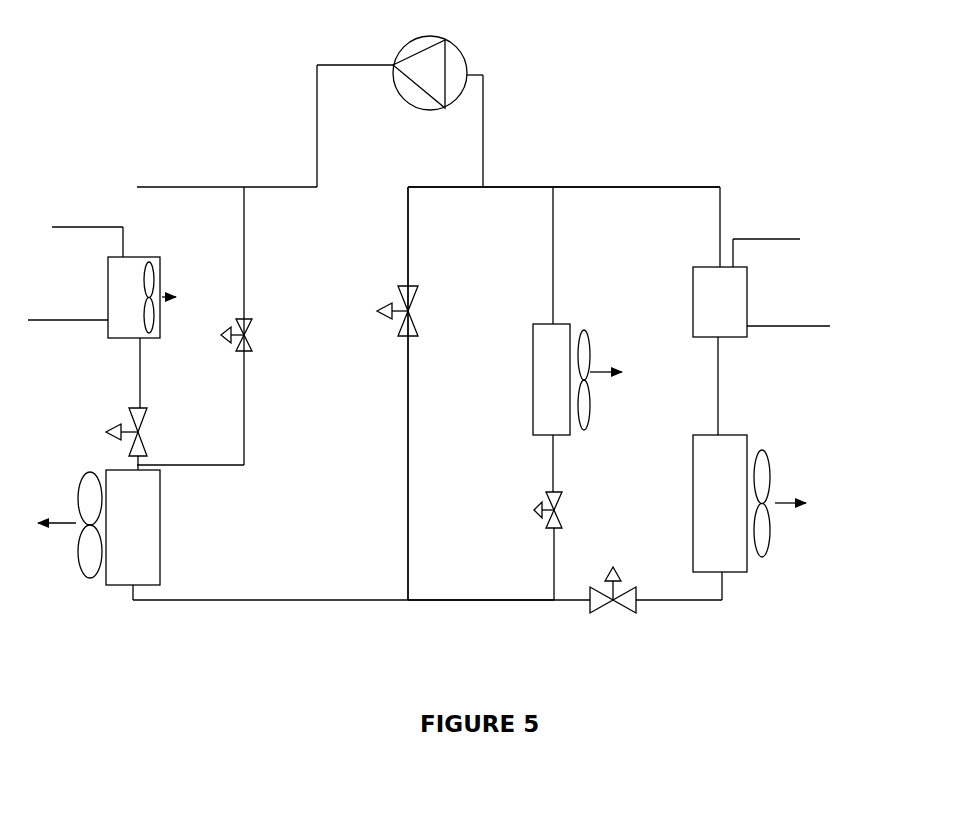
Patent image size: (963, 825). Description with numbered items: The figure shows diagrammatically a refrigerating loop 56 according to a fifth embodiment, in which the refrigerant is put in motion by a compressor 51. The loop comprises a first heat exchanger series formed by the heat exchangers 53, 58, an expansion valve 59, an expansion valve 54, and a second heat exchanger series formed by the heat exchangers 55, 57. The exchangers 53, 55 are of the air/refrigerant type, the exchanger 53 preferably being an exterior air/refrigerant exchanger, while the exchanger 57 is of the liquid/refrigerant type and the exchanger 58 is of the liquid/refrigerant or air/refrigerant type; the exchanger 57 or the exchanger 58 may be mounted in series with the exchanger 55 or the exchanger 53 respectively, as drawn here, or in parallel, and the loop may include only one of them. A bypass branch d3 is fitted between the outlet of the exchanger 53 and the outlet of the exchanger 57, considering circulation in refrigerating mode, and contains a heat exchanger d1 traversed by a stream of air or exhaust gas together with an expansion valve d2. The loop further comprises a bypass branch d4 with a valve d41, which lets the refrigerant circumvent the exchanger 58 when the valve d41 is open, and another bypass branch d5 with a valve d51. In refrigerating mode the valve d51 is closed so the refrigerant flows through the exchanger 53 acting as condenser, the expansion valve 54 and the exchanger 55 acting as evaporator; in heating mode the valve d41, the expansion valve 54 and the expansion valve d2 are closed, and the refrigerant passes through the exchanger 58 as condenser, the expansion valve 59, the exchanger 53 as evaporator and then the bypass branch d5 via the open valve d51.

The compressor 51 is at (472, 62).
The heat exchanger 53 is at (166, 477).
The expansion valve 54 is at (619, 614).
The heat exchanger 55 is at (746, 580).
The refrigerating loop 56 is at (624, 182).
The heat exchanger 57 is at (752, 310).
The heat exchanger 58 is at (170, 322).
The expansion valve 59 is at (149, 432).
The heat exchanger d1 is at (568, 316).
The expansion valve d2 is at (569, 510).
The bypass branch d3 is at (545, 572).
The bypass branch d4 is at (203, 326).
The valve d41 is at (254, 336).
The bypass branch d5 is at (419, 393).
The valve d51 is at (418, 313).